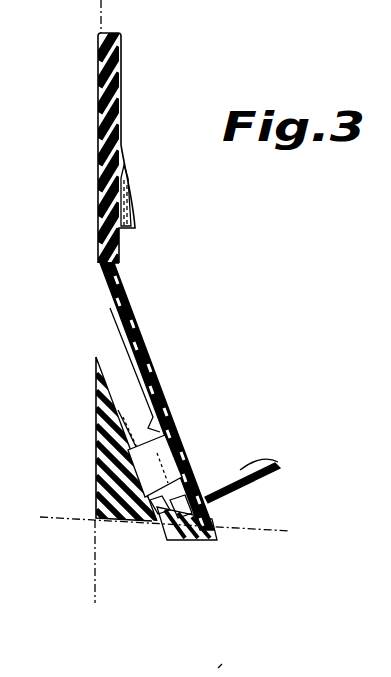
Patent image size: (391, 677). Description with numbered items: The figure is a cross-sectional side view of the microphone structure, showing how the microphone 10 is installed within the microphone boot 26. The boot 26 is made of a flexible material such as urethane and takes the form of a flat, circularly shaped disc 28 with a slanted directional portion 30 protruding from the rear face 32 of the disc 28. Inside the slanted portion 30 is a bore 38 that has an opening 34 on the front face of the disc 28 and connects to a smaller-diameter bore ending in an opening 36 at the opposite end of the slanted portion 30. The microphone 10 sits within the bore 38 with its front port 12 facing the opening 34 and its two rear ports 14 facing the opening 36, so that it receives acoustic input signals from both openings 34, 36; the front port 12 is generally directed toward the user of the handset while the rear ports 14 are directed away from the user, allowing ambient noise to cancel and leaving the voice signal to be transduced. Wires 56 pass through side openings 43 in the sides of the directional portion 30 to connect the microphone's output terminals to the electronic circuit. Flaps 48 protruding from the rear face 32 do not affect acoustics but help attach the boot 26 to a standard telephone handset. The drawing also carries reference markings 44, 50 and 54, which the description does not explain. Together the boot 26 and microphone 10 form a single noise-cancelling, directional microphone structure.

The microphone 10 is at (170, 458).
The front port 12 is at (160, 398).
The rear ports 14 is at (165, 512).
The microphone boot 26 is at (135, 40).
The disc 28 is at (121, 77).
The slanted directional portion 30 is at (150, 358).
The rear face 32 is at (118, 265).
The opening 34 is at (97, 333).
The opening 36 is at (196, 550).
The bore 38 is at (120, 395).
The side openings 43 is at (187, 543).
The axis 44 is at (98, 592).
The flaps 48 is at (135, 217).
The horizontal axis 50 is at (283, 533).
The block 54 is at (175, 422).
The wires 56 is at (247, 470).